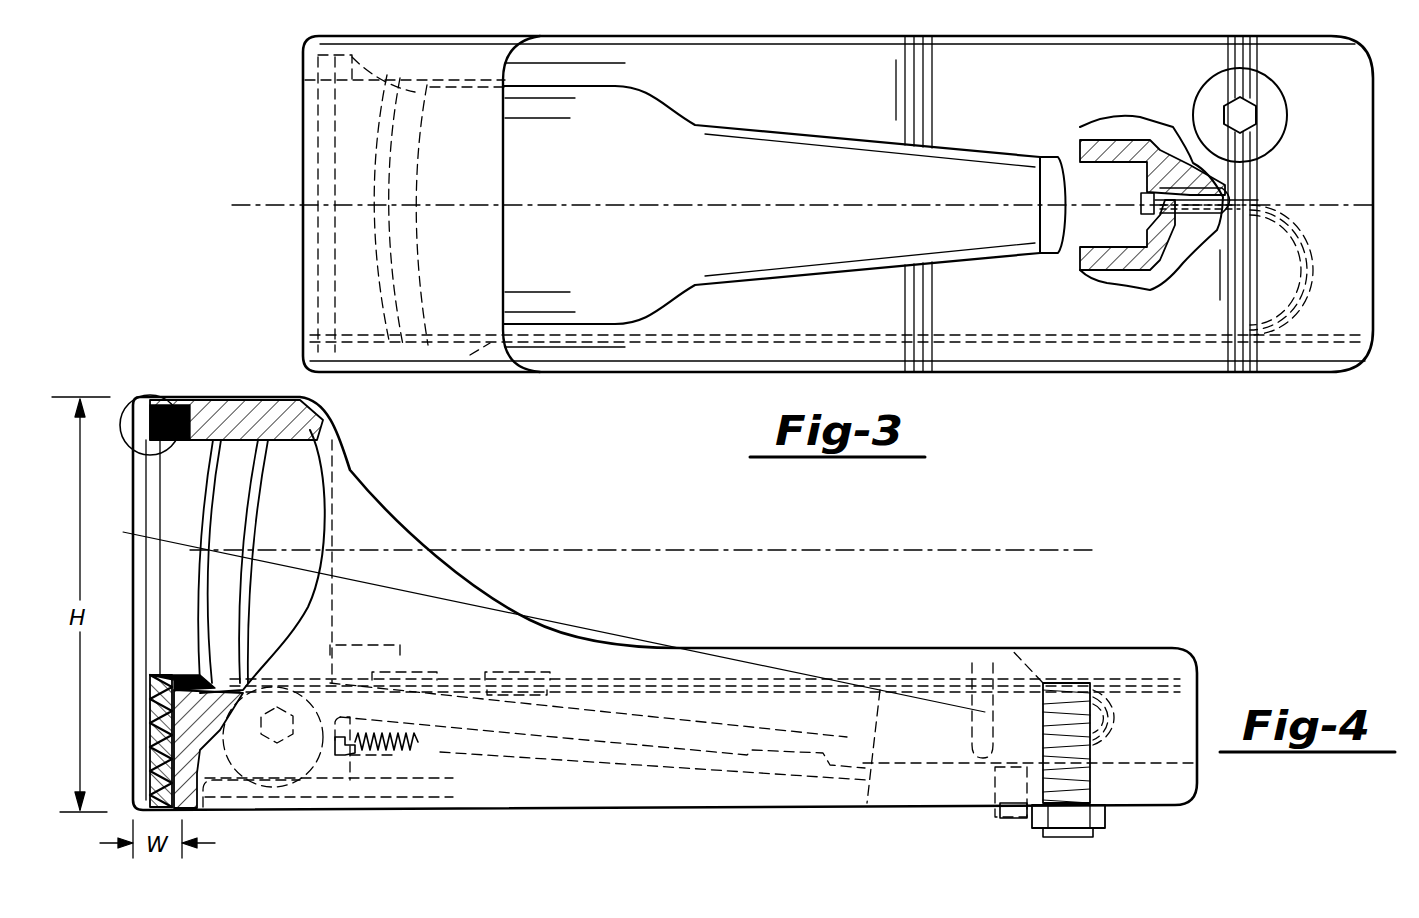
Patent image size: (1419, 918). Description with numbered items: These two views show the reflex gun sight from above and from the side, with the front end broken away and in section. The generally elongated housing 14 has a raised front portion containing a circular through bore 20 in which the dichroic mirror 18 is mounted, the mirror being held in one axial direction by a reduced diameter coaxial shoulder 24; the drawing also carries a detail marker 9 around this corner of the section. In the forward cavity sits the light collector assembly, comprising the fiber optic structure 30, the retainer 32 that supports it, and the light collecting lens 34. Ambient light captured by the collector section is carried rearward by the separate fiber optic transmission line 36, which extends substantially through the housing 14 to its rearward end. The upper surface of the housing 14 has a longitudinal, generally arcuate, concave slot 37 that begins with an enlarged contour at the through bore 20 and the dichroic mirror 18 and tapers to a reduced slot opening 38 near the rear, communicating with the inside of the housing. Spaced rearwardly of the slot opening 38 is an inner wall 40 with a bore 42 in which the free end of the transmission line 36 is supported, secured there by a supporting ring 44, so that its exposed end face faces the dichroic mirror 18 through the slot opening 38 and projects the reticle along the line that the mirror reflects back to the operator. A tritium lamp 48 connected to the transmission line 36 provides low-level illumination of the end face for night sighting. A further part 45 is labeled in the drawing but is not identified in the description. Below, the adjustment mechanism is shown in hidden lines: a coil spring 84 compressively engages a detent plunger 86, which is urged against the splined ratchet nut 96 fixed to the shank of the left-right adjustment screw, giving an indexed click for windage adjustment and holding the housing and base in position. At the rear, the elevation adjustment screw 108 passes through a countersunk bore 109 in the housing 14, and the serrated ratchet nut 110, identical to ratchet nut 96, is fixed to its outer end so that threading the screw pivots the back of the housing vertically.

In FIG. 4, the detail section circle 9 is at (168, 388).
In FIG. 4, the housing 14 is at (352, 483).
In FIG. 3, the dichroic mirror 18 is at (400, 184).
In FIG. 4, the dichroic mirror 18 is at (246, 502).
In FIG. 4, the through bore 20 is at (183, 476).
In FIG. 4, the coaxial shoulder 24 is at (245, 430).
In FIG. 4, the fiber optic structure 30 is at (162, 680).
In FIG. 3, the retainer 32 is at (420, 130).
In FIG. 3, the light collecting lens 34 is at (300, 75).
In FIG. 4, the light collecting lens 34 is at (150, 757).
In FIG. 3, the fiber optic transmission line 36 is at (728, 350).
In FIG. 4, the fiber optic transmission line 36 is at (545, 675).
In FIG. 3, the slot 37 is at (768, 130).
In FIG. 3, the slot opening 38 is at (1058, 170).
In FIG. 3, the inner wall 40 is at (1150, 270).
In FIG. 3, the bore 42 is at (1172, 206).
In FIG. 3, the supporting ring 44 is at (1143, 195).
In FIG. 4, the supporting ring 44 is at (985, 712).
In FIG. 3, the lower flange 45 is at (622, 332).
In FIG. 4, the lower flange 45 is at (503, 668).
In FIG. 3, the tritium lamp 48 is at (470, 358).
In FIG. 4, the tritium lamp 48 is at (405, 668).
In FIG. 4, the coil spring 84 is at (402, 760).
In FIG. 4, the detent plunger 86 is at (347, 792).
In FIG. 4, the ratchet nut 96 is at (272, 780).
In FIG. 3, the elevation adjustment screw 108 is at (1272, 118).
In FIG. 4, the elevation adjustment screw 108 is at (1065, 662).
In FIG. 4, the countersunk bore 109 is at (1105, 655).
In FIG. 4, the serrated ratchet nut 110 is at (1107, 815).